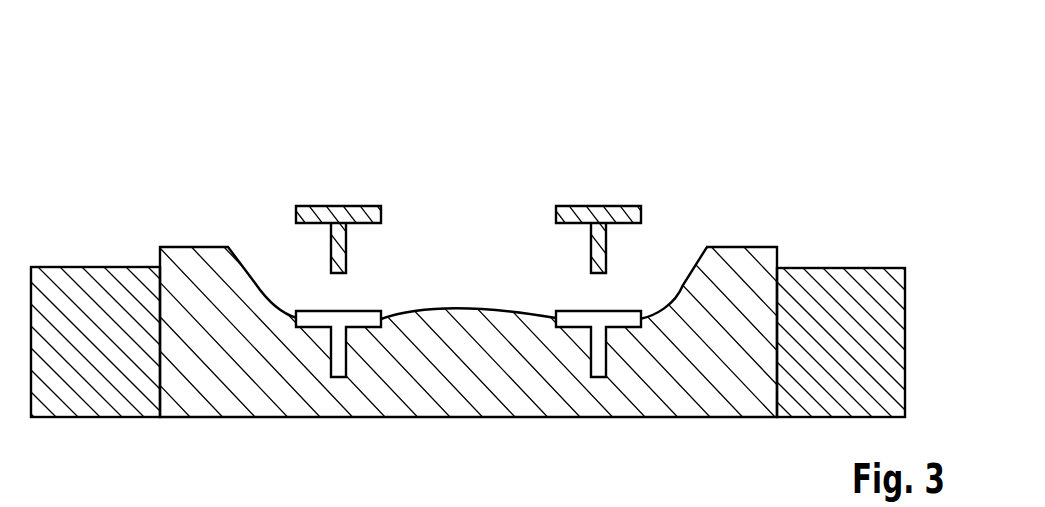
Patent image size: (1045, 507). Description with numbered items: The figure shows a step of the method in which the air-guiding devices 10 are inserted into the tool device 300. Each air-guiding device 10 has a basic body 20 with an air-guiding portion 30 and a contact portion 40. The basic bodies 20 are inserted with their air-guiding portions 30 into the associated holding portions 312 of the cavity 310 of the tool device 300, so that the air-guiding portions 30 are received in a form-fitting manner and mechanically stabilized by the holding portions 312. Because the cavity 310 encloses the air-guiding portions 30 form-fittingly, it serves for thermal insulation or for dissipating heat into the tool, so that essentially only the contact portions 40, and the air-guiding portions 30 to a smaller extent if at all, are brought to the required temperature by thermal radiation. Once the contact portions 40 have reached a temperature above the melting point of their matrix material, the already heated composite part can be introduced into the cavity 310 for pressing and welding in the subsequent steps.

The tool device 300 is at (522, 241).
The cavity 310 is at (856, 277).
The holding portions 312 is at (336, 378).
The air-guiding device 10 is at (468, 198).
The basic body 20 is at (296, 215).
The air-guiding portion 30 is at (333, 262).
The contact portion 40 is at (353, 207).